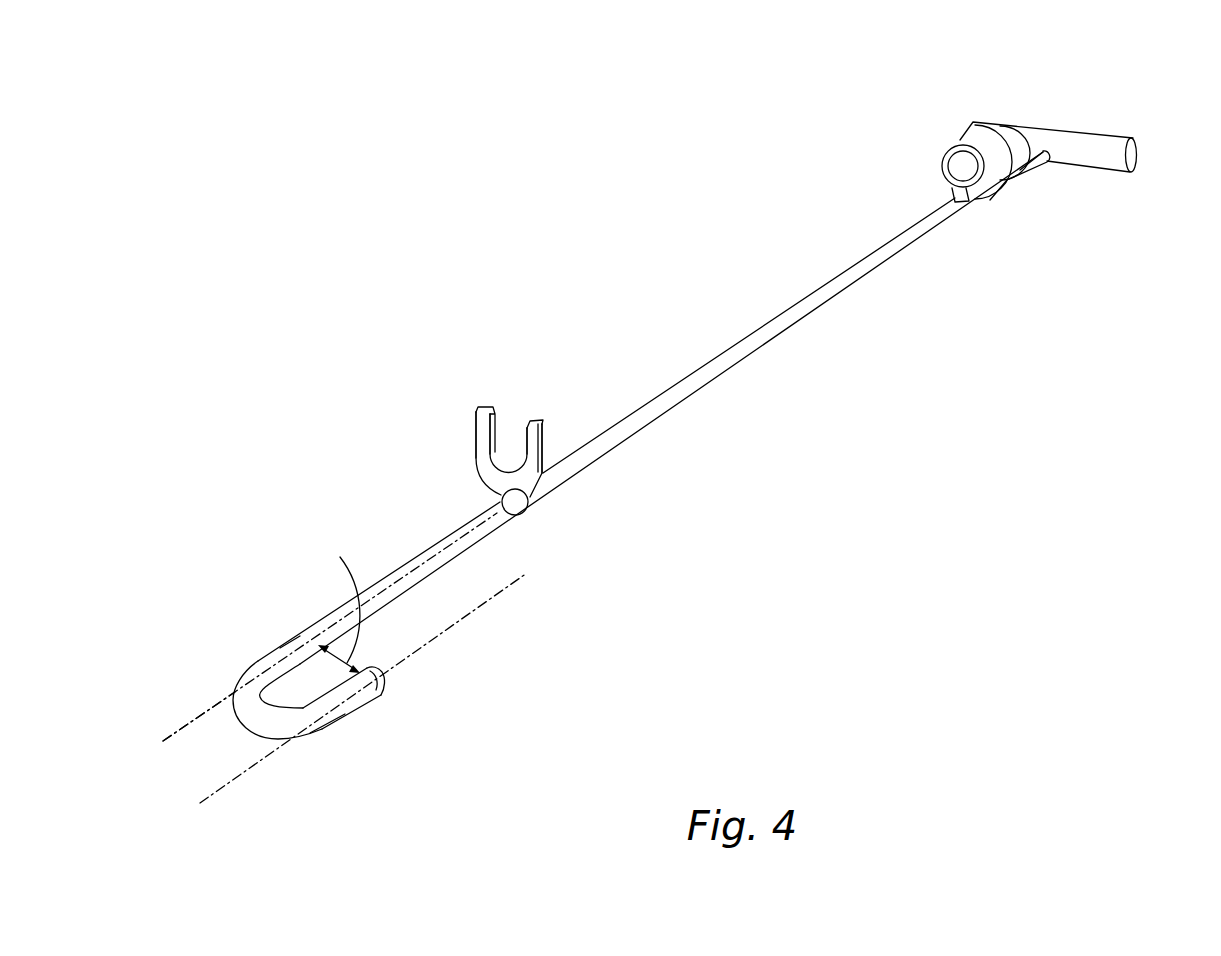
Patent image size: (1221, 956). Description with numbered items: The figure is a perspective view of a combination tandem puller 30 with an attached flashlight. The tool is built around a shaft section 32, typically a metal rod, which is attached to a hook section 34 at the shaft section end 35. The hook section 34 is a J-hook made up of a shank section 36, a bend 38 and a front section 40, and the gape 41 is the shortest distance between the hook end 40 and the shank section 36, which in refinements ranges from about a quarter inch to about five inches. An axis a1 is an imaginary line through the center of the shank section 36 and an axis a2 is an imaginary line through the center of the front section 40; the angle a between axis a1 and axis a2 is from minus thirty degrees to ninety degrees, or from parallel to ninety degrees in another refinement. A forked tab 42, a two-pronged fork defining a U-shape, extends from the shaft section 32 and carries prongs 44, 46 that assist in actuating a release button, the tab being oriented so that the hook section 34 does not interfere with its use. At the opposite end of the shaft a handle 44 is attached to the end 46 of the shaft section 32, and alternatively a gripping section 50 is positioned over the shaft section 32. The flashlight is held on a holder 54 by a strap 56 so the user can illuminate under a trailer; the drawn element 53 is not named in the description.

The combination tandem puller 30 is at (593, 249).
The shaft section 32 is at (720, 376).
The hook section 34 is at (392, 703).
The shaft section end 35 is at (297, 607).
The shank section 36 is at (277, 650).
The bend 38 is at (232, 742).
The front section 40 is at (348, 710).
The gape 41 is at (336, 606).
The forked tab 42 is at (478, 434).
The prong 44 is at (483, 410).
The prong 46 is at (537, 422).
The gripping section 50 is at (1047, 164).
The ring hub 53 is at (963, 143).
The holder 54 is at (958, 202).
The strap 56 is at (1020, 172).
The angle a is at (432, 557).
The axis a1 is at (212, 702).
The axis a2 is at (247, 772).